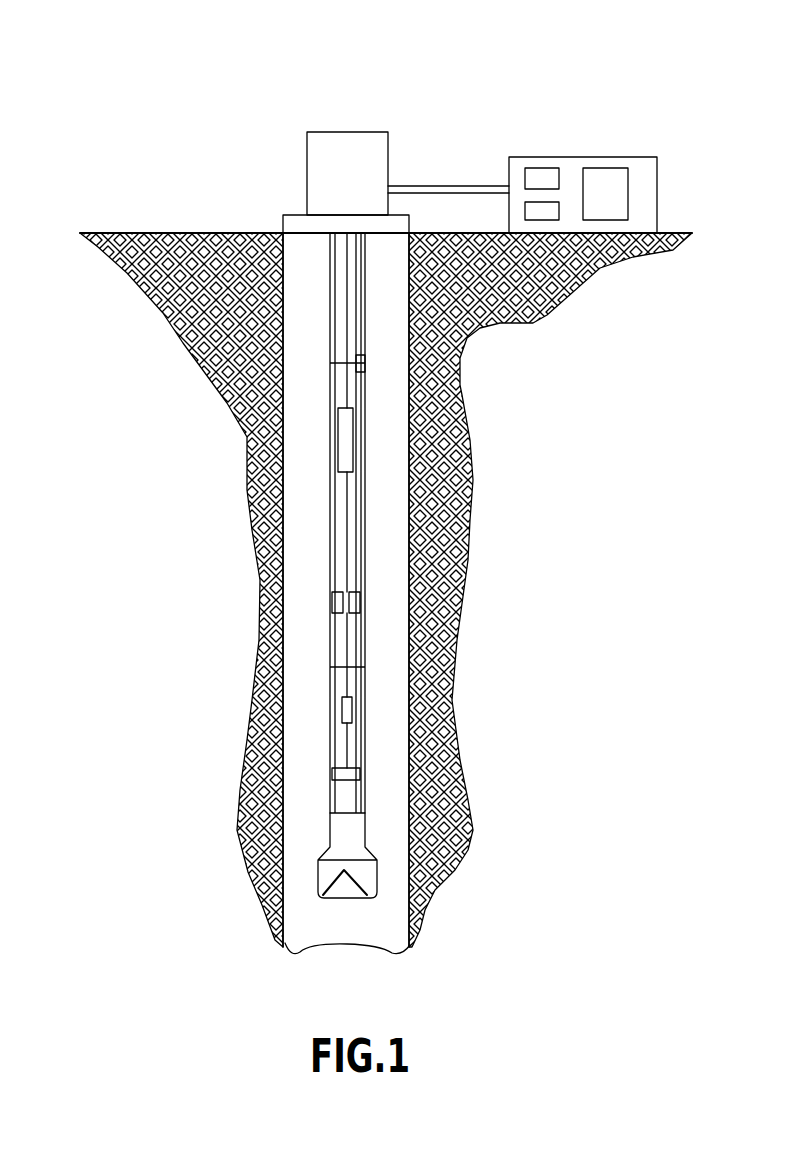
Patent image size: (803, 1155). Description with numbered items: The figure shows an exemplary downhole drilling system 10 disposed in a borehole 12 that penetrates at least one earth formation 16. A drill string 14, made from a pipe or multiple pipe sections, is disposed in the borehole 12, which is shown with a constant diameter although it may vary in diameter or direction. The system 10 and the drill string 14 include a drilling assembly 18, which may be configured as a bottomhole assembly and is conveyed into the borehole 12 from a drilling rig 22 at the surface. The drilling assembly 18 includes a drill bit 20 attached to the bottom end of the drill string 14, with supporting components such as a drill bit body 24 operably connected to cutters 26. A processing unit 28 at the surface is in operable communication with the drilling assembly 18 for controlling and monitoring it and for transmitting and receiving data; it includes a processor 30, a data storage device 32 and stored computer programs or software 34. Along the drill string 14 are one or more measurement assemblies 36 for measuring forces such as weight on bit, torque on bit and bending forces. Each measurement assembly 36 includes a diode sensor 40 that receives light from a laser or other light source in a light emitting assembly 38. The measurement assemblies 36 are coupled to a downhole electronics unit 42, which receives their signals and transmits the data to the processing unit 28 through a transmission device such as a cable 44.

The downhole drilling system 10 is at (112, 88).
The borehole 12 is at (397, 477).
The drill string 14 is at (330, 514).
The earth formation 16 is at (183, 343).
The drilling assembly 18 is at (380, 820).
The drill bit 20 is at (395, 870).
The drilling rig 22 is at (347, 150).
The drill bit body 24 is at (340, 833).
The cutters 26 is at (352, 890).
The processing unit 28 is at (630, 157).
The processor 30 is at (542, 176).
The data storage device 32 is at (530, 208).
The computer programs or software 34 is at (602, 178).
The measurement assembly 36 is at (375, 608).
The light emitting assembly 38 is at (362, 597).
The diode sensor 40 is at (330, 597).
The downhole electronics unit 42 is at (355, 435).
The cable 44 is at (367, 380).